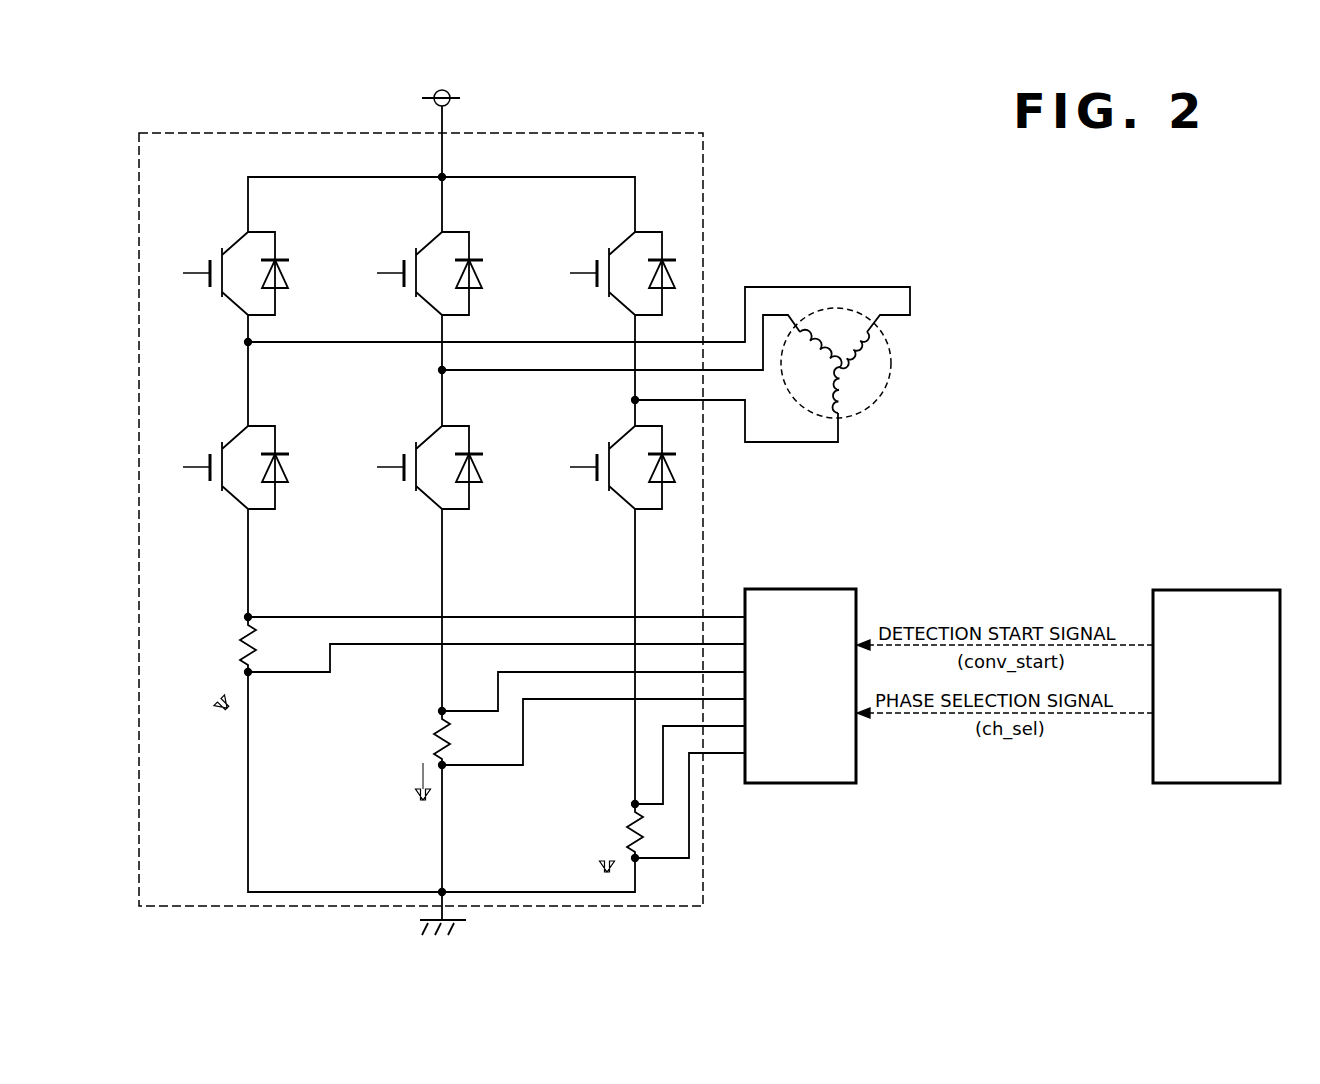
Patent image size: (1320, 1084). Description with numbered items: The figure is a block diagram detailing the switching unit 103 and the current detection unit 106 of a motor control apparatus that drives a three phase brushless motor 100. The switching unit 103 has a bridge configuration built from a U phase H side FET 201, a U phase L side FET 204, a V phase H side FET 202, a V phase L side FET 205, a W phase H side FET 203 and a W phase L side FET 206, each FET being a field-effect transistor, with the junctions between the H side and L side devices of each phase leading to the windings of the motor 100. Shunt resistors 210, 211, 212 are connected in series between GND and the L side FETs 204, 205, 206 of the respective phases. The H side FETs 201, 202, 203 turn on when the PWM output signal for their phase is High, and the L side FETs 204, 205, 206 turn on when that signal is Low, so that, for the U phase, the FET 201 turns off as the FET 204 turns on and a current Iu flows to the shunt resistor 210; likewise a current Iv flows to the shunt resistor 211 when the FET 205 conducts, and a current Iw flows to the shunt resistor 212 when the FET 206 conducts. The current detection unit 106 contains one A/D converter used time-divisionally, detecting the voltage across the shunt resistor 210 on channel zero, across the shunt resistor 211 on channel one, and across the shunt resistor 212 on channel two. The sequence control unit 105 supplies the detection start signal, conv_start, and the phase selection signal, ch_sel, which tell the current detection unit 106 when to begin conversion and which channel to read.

The three phase brushless motor 100 is at (888, 378).
The switching unit 103 is at (706, 158).
The sequence control unit 105 is at (1216, 585).
The current detection unit 106 is at (798, 584).
The U phase H side FET 201 is at (238, 239).
The V phase H side FET 202 is at (432, 239).
The W phase H side FET 203 is at (625, 239).
The U phase L side FET 204 is at (238, 434).
The V phase L side FET 205 is at (432, 434).
The W phase L side FET 206 is at (625, 434).
The shunt resistor 210 is at (238, 629).
The shunt resistor 211 is at (430, 723).
The shunt resistor 212 is at (622, 816).